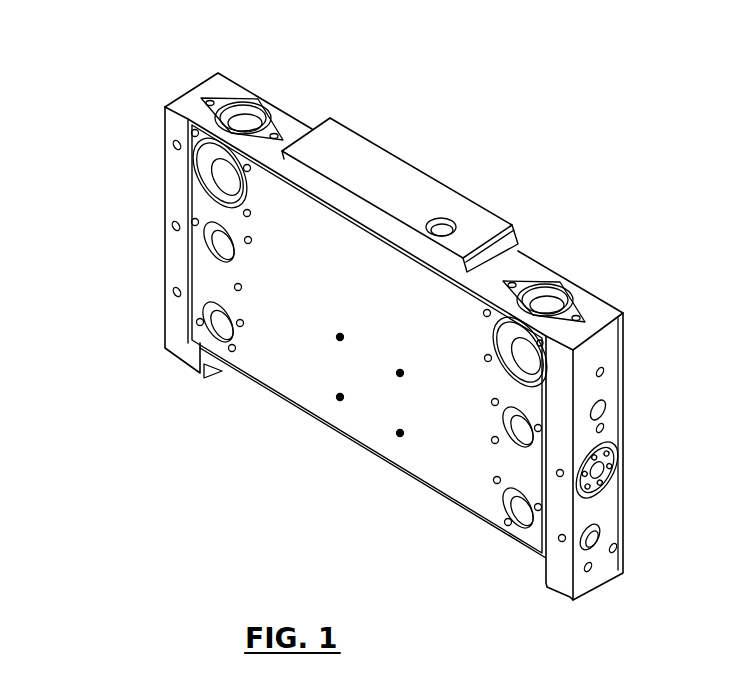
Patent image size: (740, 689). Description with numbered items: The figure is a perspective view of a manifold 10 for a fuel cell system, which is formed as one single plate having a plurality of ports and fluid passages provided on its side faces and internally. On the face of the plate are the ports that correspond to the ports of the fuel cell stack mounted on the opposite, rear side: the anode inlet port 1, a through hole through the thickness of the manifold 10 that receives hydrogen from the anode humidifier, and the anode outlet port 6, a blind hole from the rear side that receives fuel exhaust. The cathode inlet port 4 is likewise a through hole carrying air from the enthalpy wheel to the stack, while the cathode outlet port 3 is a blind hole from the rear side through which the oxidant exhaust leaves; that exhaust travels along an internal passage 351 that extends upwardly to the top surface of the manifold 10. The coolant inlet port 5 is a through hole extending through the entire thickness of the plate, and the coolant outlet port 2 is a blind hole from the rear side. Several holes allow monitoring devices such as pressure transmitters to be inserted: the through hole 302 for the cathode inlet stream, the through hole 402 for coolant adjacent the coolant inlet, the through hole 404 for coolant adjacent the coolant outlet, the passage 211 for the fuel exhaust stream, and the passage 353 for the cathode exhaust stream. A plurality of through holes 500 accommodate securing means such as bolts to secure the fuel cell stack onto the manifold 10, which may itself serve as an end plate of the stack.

The manifold 10 is at (603, 125).
The anode inlet port 1 is at (531, 352).
The coolant outlet port 2 is at (520, 414).
The cathode outlet port 3 is at (522, 518).
The cathode inlet port 4 is at (194, 160).
The coolant inlet port 5 is at (190, 250).
The anode outlet port 6 is at (210, 338).
The through hole 302 is at (174, 144).
The through hole 402 is at (175, 227).
The passage 211 is at (176, 292).
The through holes 500 is at (250, 238).
The internal passage 351 is at (440, 220).
The passage 353 is at (561, 543).
The through hole 404 is at (560, 480).